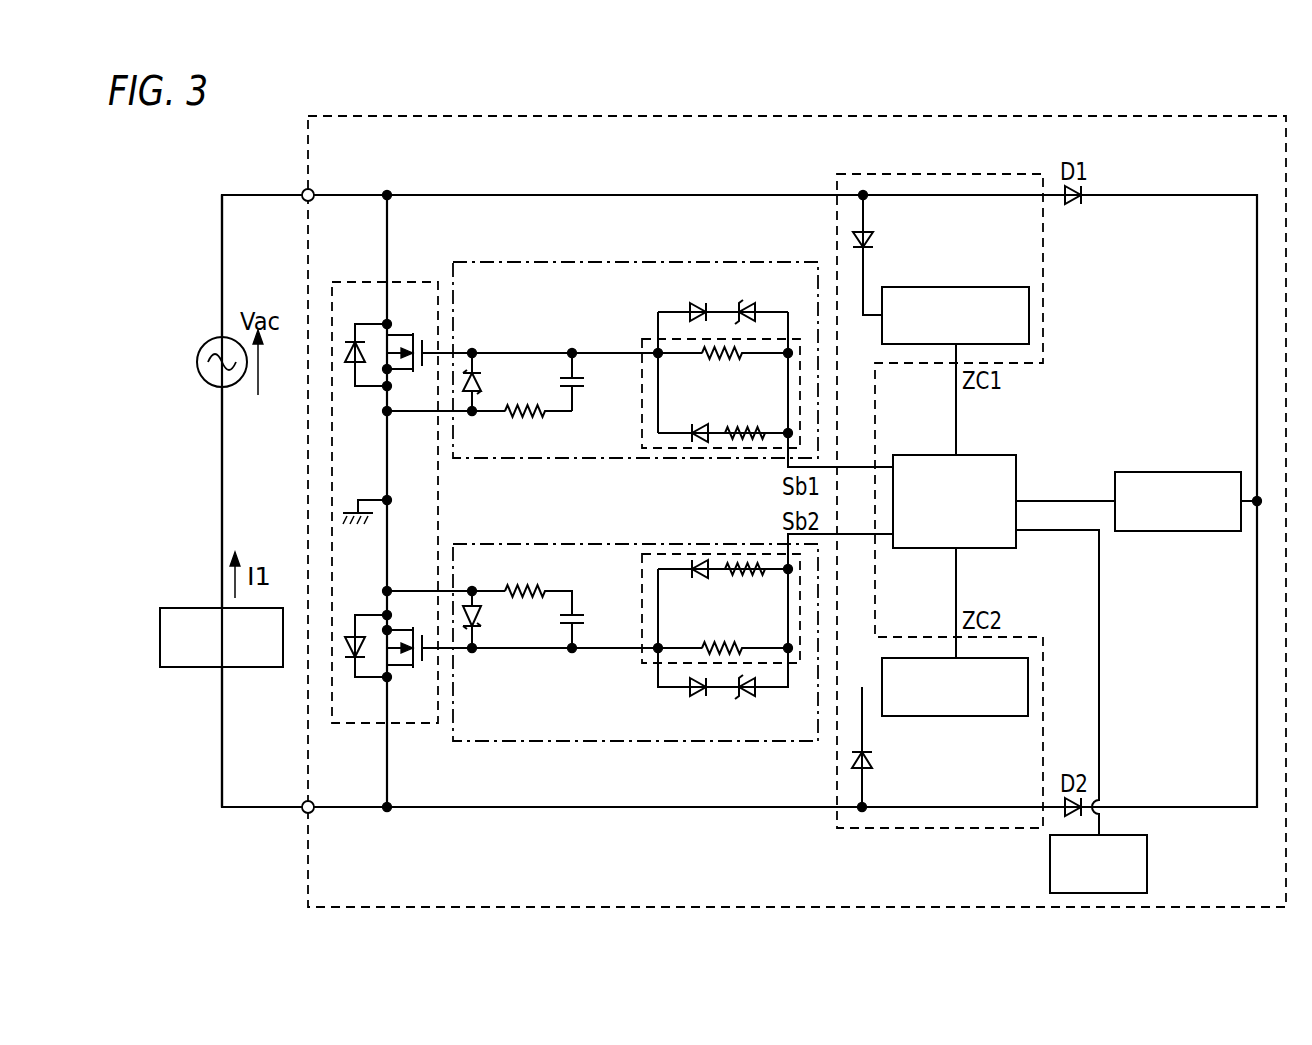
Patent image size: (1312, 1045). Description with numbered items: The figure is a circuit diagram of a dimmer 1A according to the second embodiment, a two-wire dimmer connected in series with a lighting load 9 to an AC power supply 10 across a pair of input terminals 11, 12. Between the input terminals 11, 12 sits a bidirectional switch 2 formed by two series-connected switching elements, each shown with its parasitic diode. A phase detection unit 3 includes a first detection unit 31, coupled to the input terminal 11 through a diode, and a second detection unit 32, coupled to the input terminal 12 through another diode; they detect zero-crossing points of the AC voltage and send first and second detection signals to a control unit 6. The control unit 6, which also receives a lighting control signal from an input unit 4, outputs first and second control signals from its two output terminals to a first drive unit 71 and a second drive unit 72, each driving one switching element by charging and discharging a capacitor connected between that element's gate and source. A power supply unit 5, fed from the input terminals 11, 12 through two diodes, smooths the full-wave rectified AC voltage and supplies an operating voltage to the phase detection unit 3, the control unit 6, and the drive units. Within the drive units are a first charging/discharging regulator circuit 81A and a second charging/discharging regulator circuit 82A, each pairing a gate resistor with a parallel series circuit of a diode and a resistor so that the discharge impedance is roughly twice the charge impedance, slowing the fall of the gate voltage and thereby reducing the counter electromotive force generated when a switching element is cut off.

The dimmer 1A is at (1225, 114).
The bidirectional switch 2 is at (353, 281).
The phase detection unit 3 is at (931, 173).
The input unit 4 is at (1148, 866).
The power supply unit 5 is at (1177, 471).
The control unit 6 is at (1019, 470).
The load 9 is at (190, 607).
The AC power supply 10 is at (207, 344).
The input terminal 11 is at (302, 190).
The input terminal 12 is at (302, 812).
The first detection unit 31 is at (962, 286).
The second detection unit 32 is at (965, 718).
The first drive unit 71 is at (719, 260).
The second drive unit 72 is at (721, 742).
The first charging/discharging regulator circuit 81A is at (641, 339).
The second charging/discharging regulator circuit 82A is at (641, 663).